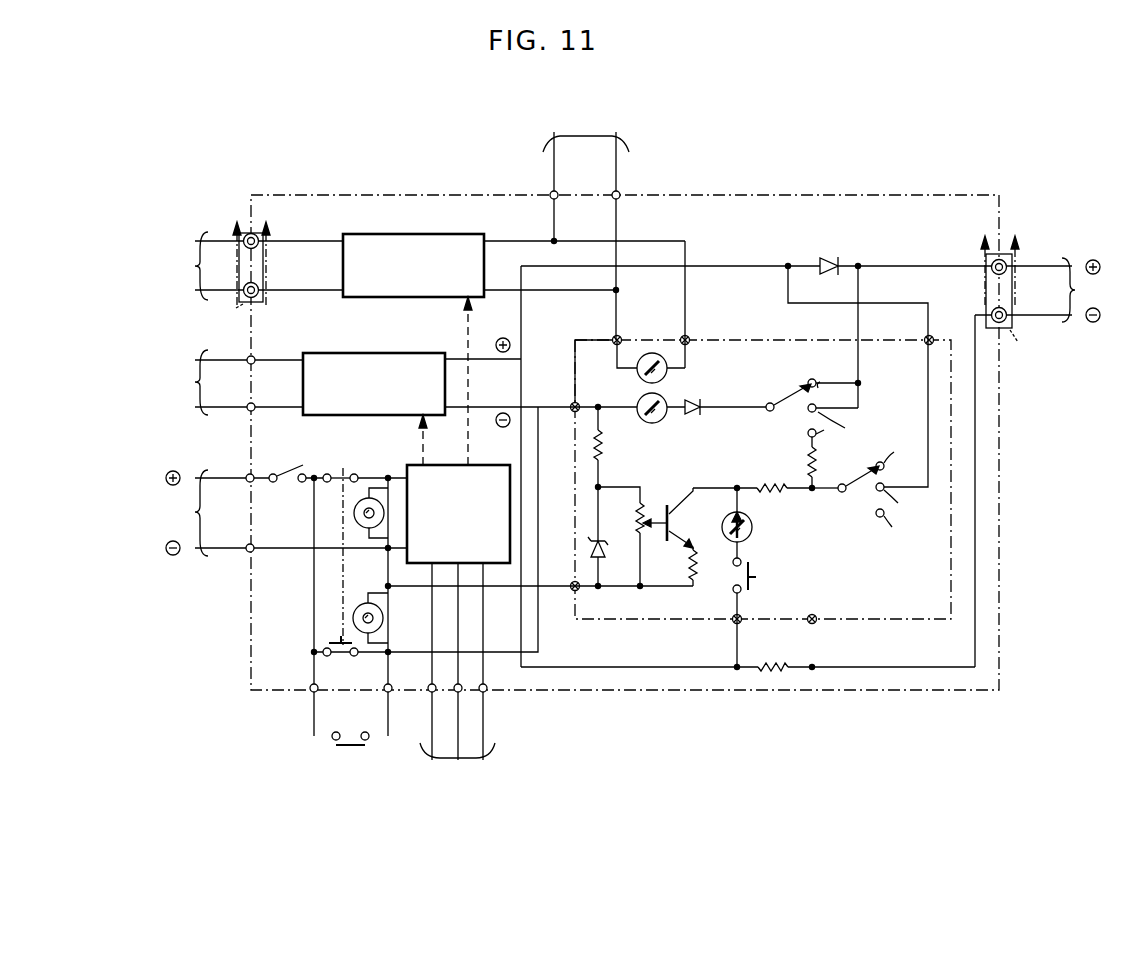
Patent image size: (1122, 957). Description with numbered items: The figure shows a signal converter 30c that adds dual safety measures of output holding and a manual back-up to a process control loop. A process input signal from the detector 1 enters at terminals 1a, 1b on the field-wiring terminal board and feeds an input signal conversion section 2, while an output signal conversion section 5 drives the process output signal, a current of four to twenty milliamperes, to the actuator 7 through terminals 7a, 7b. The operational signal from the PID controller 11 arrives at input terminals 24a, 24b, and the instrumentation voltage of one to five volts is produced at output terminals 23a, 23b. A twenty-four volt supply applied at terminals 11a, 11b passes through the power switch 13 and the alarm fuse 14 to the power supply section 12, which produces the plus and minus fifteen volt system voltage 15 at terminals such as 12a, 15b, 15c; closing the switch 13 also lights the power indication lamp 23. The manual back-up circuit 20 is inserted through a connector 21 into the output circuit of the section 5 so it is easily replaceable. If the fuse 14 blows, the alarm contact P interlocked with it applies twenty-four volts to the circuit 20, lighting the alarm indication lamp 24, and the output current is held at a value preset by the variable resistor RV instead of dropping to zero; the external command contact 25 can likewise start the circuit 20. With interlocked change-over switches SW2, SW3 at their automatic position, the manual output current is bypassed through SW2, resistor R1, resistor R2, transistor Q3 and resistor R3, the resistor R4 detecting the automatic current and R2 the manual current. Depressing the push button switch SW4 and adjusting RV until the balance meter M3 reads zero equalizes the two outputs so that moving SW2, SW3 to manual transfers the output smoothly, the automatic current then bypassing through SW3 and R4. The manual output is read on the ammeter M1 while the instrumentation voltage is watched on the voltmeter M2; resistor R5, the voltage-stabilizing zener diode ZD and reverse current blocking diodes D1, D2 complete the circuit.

The detector 1 is at (264, 259).
The terminal 1a is at (258, 245).
The terminal 1b is at (258, 294).
The input signal conversion section 2 is at (343, 234).
The output signal conversion section 5 is at (358, 353).
The actuator 7 is at (1016, 288).
The terminal 7a is at (990, 262).
The terminal 7b is at (990, 311).
The PID controller 11 is at (286, 529).
The terminal 11a is at (254, 482).
The terminal 11b is at (254, 545).
The power supply section 12 is at (469, 468).
The terminal 12a is at (430, 694).
The power switch 13 is at (287, 468).
The alarm fuse 14 is at (336, 472).
The DC voltage 15 is at (432, 675).
The terminal 15b is at (460, 693).
The terminal 15c is at (486, 693).
The manual back-up circuit 20 is at (758, 341).
The connector 21 is at (817, 619).
The power indication lamp 23 is at (512, 328).
The output terminal 23a is at (551, 192).
The output terminal 23b is at (621, 192).
The alarm indication lamp 24 is at (291, 486).
The input terminal 24a is at (253, 357).
The input terminal 24b is at (253, 404).
The external command contact 25 is at (340, 748).
The signal converter 30c is at (912, 692).
The ammeter M1 is at (652, 423).
The voltmeter M2 is at (654, 353).
The balance meter M3 is at (752, 527).
The reverse current blocking diode D1 is at (833, 259).
The reverse current blocking diode D2 is at (700, 418).
The interlocked change-over switch SW2 is at (770, 402).
The interlocked change-over switch SW3 is at (850, 496).
The push button switch SW4 is at (750, 580).
The resistor R1 is at (806, 456).
The resistor R2 is at (768, 482).
The resistor R3 is at (688, 563).
The resistor R4 is at (766, 664).
The resistor R5 is at (592, 447).
The variable resistor RV is at (636, 512).
The zener diode ZD is at (603, 566).
The transistor Q3 is at (689, 518).
The alarm contact P is at (328, 643).